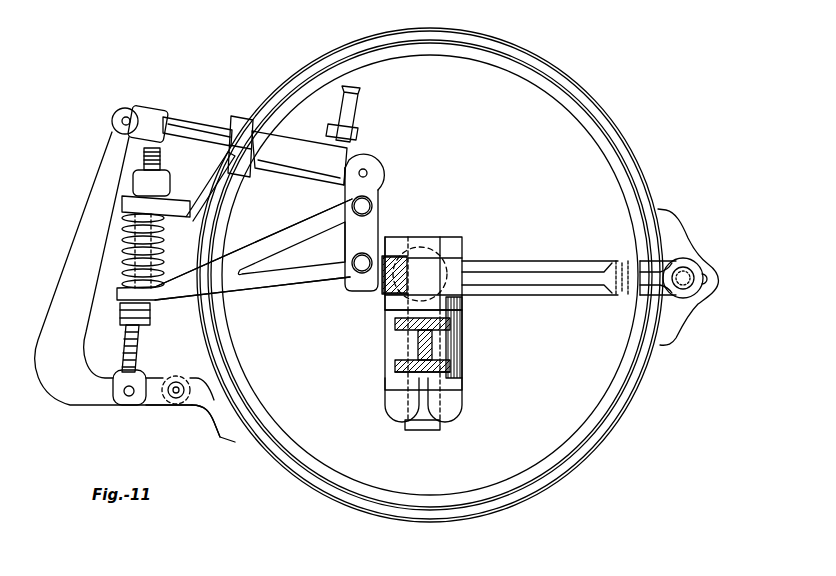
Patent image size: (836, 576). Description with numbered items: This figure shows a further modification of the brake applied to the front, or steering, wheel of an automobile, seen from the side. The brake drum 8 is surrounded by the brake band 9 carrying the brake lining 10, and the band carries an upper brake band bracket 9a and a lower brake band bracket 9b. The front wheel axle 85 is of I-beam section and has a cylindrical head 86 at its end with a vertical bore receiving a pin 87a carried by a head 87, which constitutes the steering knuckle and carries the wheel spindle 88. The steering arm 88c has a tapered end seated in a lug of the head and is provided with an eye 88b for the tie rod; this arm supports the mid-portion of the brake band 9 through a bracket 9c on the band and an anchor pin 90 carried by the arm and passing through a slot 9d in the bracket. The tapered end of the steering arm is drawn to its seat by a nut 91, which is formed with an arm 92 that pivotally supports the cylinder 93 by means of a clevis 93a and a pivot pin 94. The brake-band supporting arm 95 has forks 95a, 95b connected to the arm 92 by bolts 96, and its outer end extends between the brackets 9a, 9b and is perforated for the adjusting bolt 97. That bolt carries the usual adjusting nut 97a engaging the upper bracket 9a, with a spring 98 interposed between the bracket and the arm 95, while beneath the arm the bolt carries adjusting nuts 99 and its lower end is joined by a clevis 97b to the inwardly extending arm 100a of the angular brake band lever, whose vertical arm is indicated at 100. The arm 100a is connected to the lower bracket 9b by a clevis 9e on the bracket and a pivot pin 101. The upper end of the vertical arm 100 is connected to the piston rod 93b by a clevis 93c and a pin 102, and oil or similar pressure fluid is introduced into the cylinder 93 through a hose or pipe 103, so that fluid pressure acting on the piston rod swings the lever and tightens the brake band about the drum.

The brake drum 8 is at (478, 62).
The brake band 9 is at (560, 74).
The brake lining 10 is at (520, 52).
The upper brake band bracket 9a is at (172, 196).
The lower brake band bracket 9b is at (213, 422).
The bracket 9c is at (694, 250).
The slot 9d is at (706, 283).
The clevis 9e is at (177, 404).
The front wheel axle 85 is at (432, 344).
The cylindrical head 86 is at (390, 348).
The head 87 is at (458, 241).
The pin 87a is at (405, 353).
The wheel spindle 88 is at (423, 254).
The eye 88b is at (540, 262).
The steering arm 88c is at (582, 297).
The anchor pin 90 is at (700, 272).
The nut 91 is at (394, 236).
The arm 92 is at (361, 229).
The cylinder 93 is at (299, 158).
The clevis 93a is at (362, 160).
The piston rod 93b is at (195, 128).
The clevis 93c is at (120, 108).
The pivot pin 94 is at (370, 174).
The brake-band supporting arm 95 is at (233, 288).
The fork 95a is at (313, 282).
The fork 95b is at (312, 226).
The bolts 96 is at (352, 206).
The adjusting bolt 97 is at (140, 338).
The adjusting nut 97a is at (135, 185).
The clevis 97b is at (113, 392).
The spring 98 is at (155, 247).
The adjusting nuts 99 is at (124, 313).
The vertical arm of brake band lever 100 is at (60, 278).
The inwardly extending arm 100a is at (163, 405).
The pivot pin 101 is at (176, 380).
The pin 102 is at (143, 111).
The hose or pipe 103 is at (340, 109).